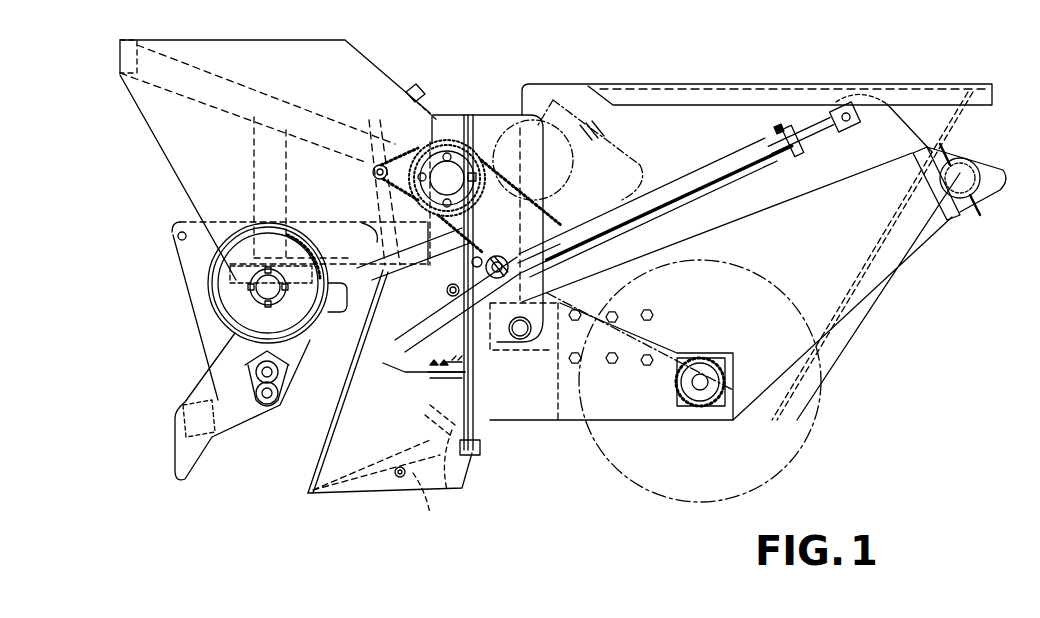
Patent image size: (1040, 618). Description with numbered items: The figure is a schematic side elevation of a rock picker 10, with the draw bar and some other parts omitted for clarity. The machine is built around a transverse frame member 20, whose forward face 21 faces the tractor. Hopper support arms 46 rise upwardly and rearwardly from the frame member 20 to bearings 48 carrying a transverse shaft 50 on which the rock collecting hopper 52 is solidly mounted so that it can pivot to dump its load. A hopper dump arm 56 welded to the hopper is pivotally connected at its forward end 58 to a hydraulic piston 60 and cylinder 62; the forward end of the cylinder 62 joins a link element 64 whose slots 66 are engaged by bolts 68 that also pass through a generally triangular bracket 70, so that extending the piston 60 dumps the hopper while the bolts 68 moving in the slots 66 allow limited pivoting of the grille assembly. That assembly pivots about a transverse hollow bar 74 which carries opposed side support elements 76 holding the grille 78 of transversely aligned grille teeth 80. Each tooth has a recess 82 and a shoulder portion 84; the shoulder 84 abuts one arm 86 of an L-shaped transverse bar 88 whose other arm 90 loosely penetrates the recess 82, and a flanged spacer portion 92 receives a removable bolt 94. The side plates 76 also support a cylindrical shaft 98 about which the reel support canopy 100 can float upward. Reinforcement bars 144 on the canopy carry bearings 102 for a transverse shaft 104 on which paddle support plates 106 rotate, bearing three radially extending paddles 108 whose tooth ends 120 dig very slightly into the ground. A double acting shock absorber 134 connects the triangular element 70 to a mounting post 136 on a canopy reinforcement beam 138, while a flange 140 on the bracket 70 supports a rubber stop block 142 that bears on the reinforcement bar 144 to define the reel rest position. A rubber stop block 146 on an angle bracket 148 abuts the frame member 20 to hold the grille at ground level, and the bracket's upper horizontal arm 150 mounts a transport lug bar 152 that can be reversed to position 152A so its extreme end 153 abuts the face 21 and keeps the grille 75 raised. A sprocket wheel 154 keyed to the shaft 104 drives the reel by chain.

The rock picker 10 is at (528, 66).
The transverse frame member 20 is at (572, 422).
The forward face of transverse bar 21 is at (452, 364).
The hopper support arms 46 is at (890, 270).
The bearings 48 is at (975, 205).
The shaft 50 is at (968, 170).
The rock collecting hopper 52 is at (833, 343).
The hopper dump arm 56 is at (910, 123).
The forward end of hopper dump arm 58 is at (866, 120).
The hydraulic piston 60 is at (815, 135).
The cylinder 62 is at (772, 160).
The link element 64 is at (503, 255).
The slots 66 is at (415, 308).
The bolts 68 is at (462, 268).
The triangular shaped bracket 70 is at (447, 328).
The transverse hollow bar 74 is at (527, 332).
The grille 75 is at (308, 431).
The side support elements 76 is at (325, 475).
The grille 78 is at (383, 463).
The grille teeth 80 is at (360, 492).
The recess 82 is at (408, 490).
The shoulder portion 84 is at (455, 478).
The arm of L-shaped bar 86 is at (470, 465).
The L-shaped transverse bar 88 is at (470, 447).
The arm of L-shaped bar 90 is at (433, 505).
The flanged spacer portion 92 is at (420, 452).
The removable bolt 94 is at (432, 420).
The cylindrical shaft 98 is at (448, 172).
The reel support canopy 100 is at (348, 64).
The bearings 102 is at (230, 272).
The transverse shaft 104 is at (262, 290).
The paddle support plates 106 is at (178, 233).
The paddles 108 is at (177, 435).
The ends of paddle teeth 120 is at (177, 476).
The double acting shock absorber 134 is at (370, 209).
The mounting post 136 is at (373, 162).
The canopy reinforcement beam 138 is at (178, 72).
The flange 140 is at (343, 318).
The rubber stop block 142 is at (307, 297).
The reinforcement bars 144 is at (349, 260).
The rubber stop block 146 is at (478, 427).
The angle bracket 148 is at (475, 438).
The upper horizontal arm 150 is at (425, 387).
The transport lug bar 152 is at (393, 372).
The broken line position of lug bar 152A is at (555, 380).
The extreme end of lug bar 153 is at (522, 360).
The sprocket wheel 154 is at (240, 310).